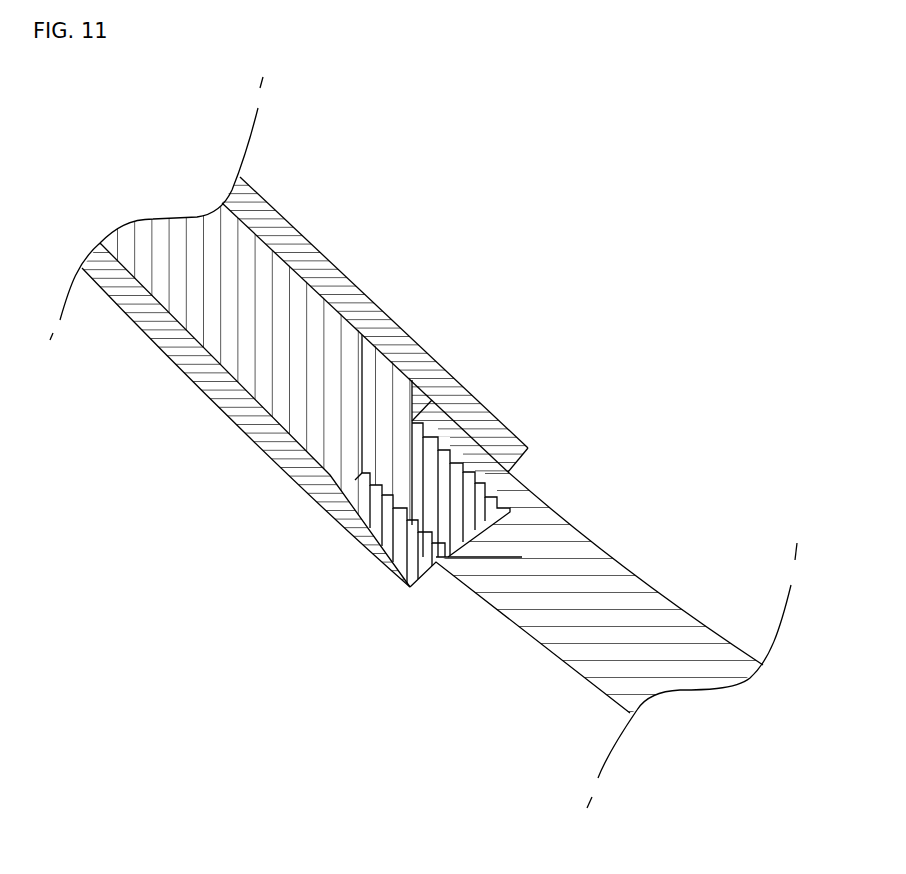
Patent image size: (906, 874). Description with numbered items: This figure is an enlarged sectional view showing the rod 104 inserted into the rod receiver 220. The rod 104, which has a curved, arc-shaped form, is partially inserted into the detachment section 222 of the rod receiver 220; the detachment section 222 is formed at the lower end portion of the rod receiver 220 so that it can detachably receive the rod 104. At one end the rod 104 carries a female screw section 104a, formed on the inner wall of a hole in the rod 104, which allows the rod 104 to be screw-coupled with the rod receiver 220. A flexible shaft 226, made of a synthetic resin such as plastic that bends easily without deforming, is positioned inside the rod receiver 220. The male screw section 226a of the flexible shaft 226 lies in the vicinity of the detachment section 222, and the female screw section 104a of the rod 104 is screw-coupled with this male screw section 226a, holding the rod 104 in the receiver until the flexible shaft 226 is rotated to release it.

The rod 104 is at (510, 583).
The female screw section 104a is at (440, 420).
The rod receiver 220 is at (355, 300).
The detachment section 222 is at (530, 450).
The flexible shaft 226 is at (240, 348).
The male screw section 226a is at (413, 483).